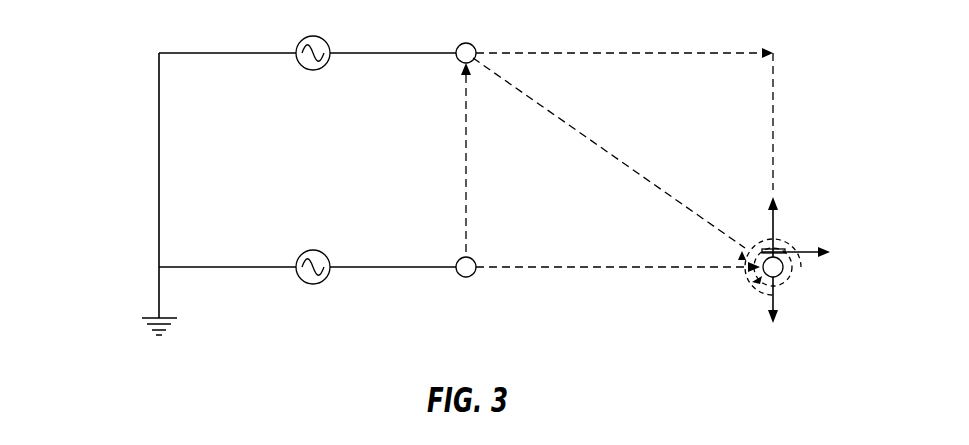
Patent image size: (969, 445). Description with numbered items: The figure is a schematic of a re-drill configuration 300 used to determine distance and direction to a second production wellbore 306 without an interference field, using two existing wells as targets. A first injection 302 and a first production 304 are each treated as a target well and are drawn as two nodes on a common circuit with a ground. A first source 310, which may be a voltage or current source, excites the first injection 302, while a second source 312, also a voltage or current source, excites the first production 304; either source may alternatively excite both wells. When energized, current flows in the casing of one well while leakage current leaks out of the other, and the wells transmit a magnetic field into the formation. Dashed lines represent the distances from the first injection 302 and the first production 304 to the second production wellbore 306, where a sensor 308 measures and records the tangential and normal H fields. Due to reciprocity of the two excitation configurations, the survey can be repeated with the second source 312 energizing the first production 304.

The re-drill configuration 300 is at (142, 38).
The first injection 302 is at (466, 43).
The first production 304 is at (472, 277).
The second production wellbore 306 is at (780, 276).
The sensor 308 is at (782, 249).
The first source 310 is at (313, 36).
The second source 312 is at (313, 250).